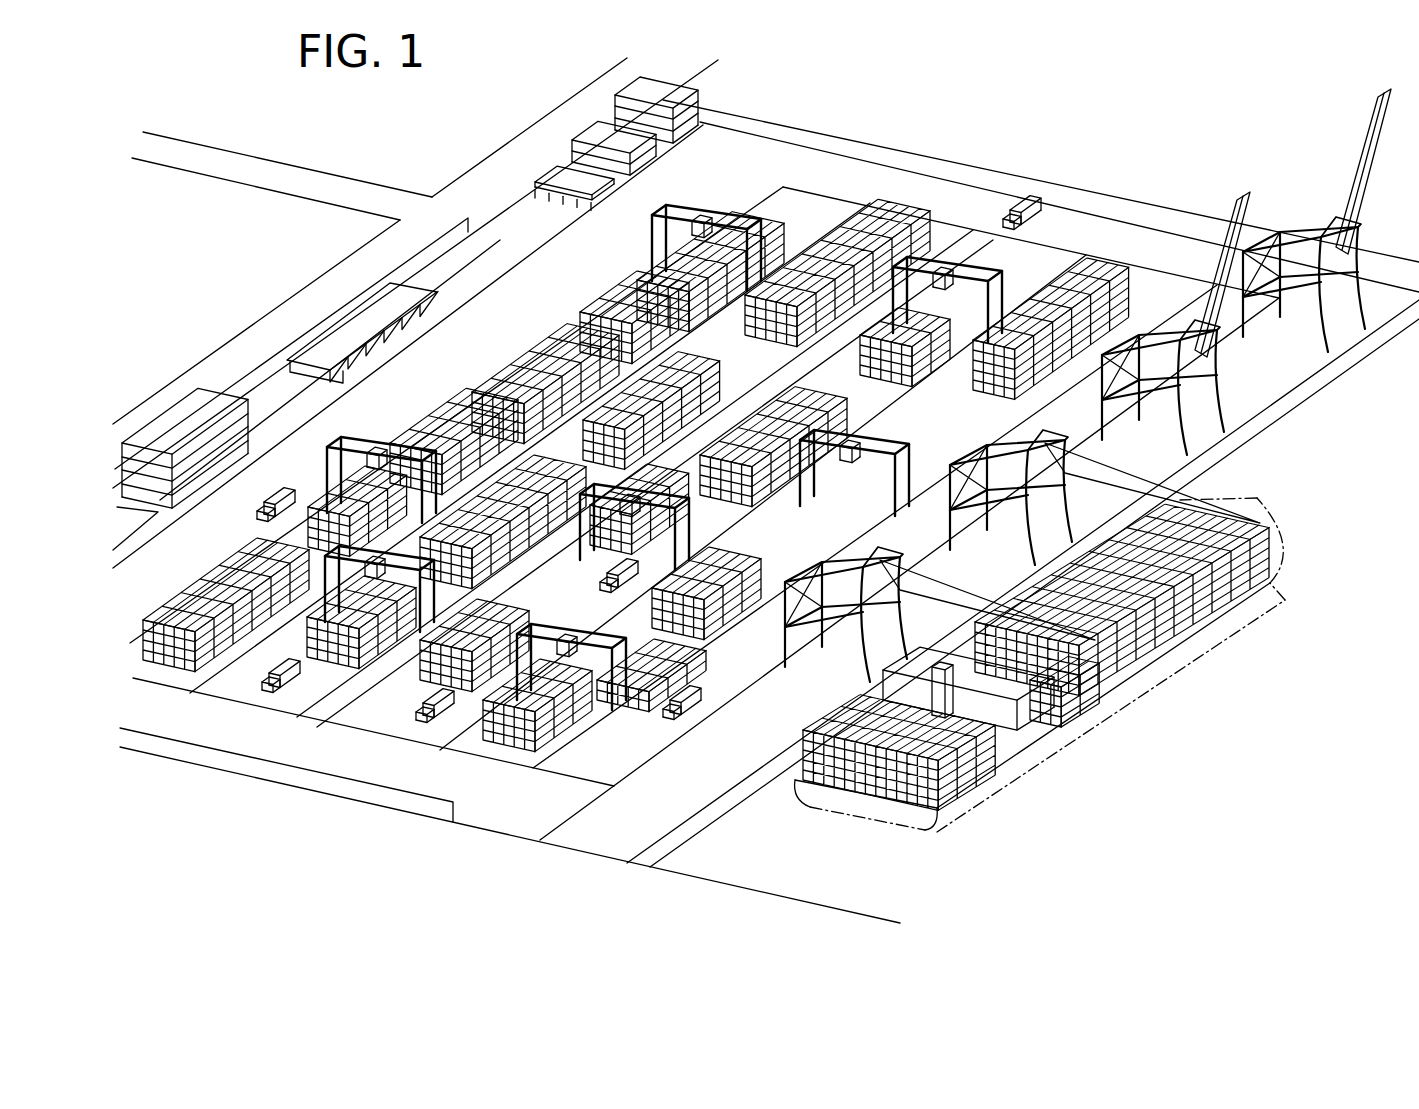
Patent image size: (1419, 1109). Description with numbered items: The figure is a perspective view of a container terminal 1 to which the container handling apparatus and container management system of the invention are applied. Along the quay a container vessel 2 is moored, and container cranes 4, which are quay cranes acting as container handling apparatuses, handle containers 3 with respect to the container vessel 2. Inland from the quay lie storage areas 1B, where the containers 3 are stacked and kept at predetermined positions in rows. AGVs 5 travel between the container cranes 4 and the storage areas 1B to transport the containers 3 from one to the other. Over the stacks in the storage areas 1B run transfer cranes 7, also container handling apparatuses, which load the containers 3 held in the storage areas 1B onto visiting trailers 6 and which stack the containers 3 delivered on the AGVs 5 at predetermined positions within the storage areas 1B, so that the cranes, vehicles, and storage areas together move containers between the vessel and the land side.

The container terminal 1 is at (979, 162).
The storage area 1B is at (810, 203).
The container vessel 2 is at (1214, 642).
The container 3 is at (880, 197).
The container crane 4 is at (1218, 400).
The AGV 5 is at (1013, 200).
The trailer 6 is at (267, 492).
The transfer crane 7 is at (687, 207).